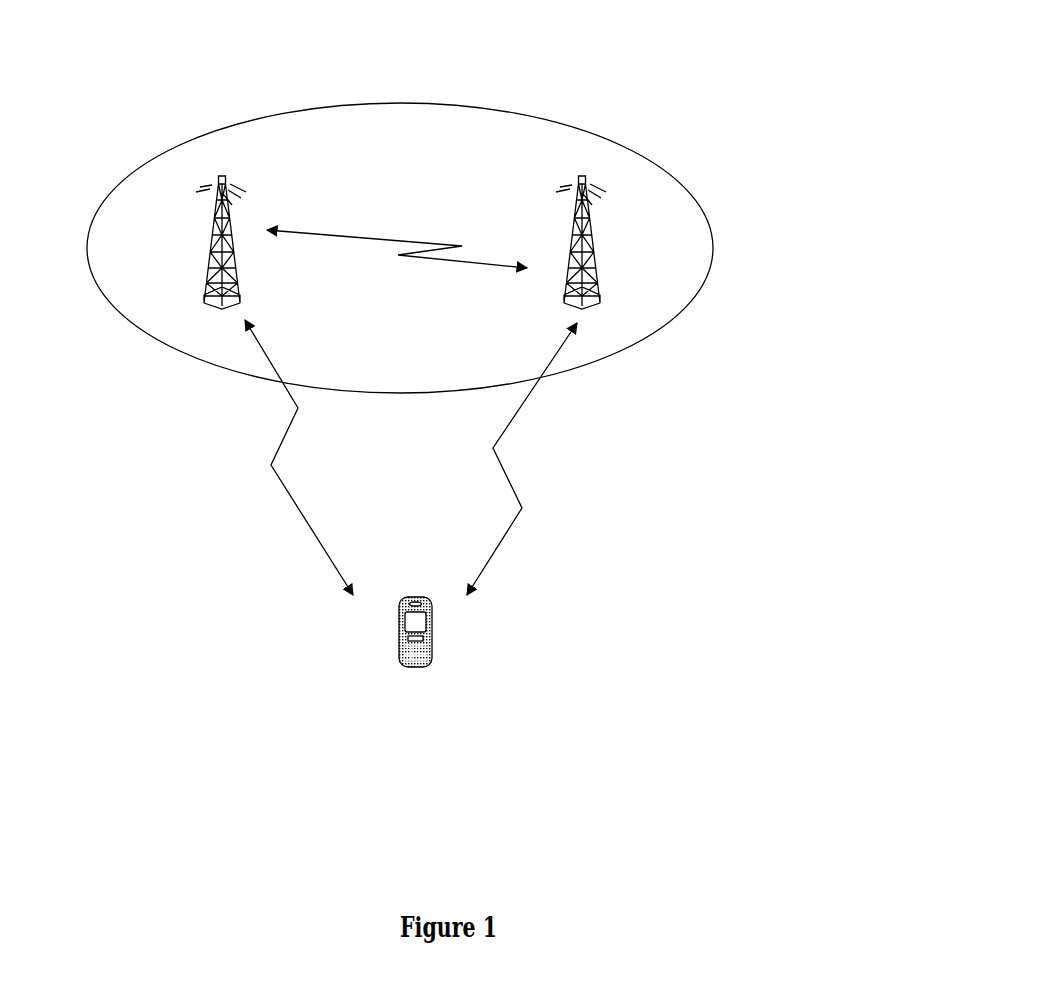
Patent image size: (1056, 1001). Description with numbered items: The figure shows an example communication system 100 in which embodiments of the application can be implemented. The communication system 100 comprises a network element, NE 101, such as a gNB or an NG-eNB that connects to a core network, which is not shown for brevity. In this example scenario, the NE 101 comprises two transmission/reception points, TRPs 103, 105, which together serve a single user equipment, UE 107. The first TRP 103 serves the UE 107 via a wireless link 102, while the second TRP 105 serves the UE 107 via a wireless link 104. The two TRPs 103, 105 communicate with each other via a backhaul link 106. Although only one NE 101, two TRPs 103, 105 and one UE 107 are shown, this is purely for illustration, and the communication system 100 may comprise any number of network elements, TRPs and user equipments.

The communication system 100 is at (913, 135).
The network element (NE) 101 is at (433, 138).
The wireless link 102 is at (259, 538).
The TRP 103 is at (187, 218).
The wireless link 104 is at (567, 528).
The TRP 105 is at (613, 227).
The backhaul link 106 is at (362, 232).
The UE 107 is at (406, 680).